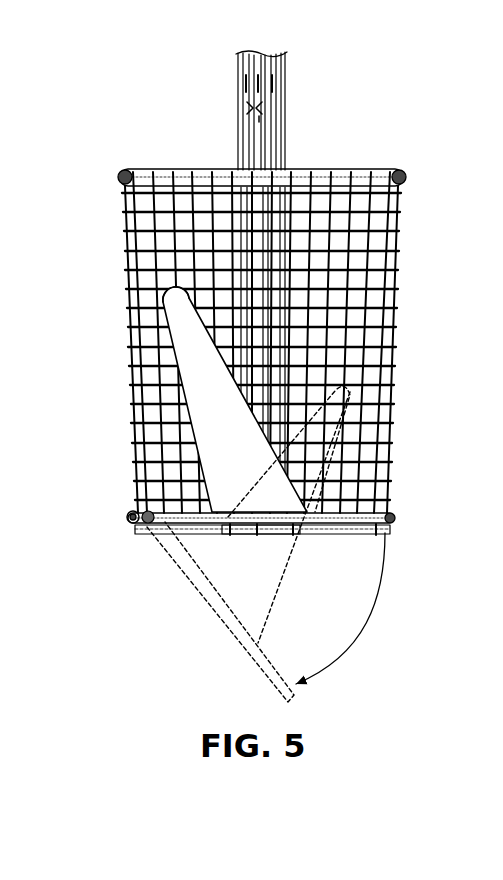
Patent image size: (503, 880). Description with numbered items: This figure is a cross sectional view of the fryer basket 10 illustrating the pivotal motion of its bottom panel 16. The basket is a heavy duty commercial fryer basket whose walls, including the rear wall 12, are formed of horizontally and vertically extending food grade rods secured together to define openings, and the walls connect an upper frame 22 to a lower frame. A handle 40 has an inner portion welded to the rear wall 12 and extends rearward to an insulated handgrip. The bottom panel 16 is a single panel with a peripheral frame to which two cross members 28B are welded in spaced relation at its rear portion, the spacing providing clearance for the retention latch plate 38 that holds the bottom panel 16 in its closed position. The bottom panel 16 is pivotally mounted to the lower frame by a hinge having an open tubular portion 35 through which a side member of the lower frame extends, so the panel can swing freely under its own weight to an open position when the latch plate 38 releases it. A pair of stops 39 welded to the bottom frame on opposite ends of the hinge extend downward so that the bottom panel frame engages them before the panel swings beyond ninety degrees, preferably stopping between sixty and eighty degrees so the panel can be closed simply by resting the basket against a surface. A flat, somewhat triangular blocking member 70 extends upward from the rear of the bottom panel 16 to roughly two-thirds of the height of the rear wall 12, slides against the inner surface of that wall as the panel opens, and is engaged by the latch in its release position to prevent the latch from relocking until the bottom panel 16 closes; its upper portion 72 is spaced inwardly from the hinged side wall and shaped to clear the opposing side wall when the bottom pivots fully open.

The fryer basket 10 is at (100, 270).
The rear wall 12 is at (392, 329).
The bottom panel 16 is at (235, 635).
The upper frame 22 is at (405, 177).
The cross members 28B is at (378, 533).
The tubular portion 35 is at (127, 514).
The retention latch plate 38 is at (267, 530).
The stops 39 is at (148, 533).
The handle 40 is at (231, 103).
The blocking member 70 is at (205, 405).
The upper portion of blocking member 72 is at (176, 304).